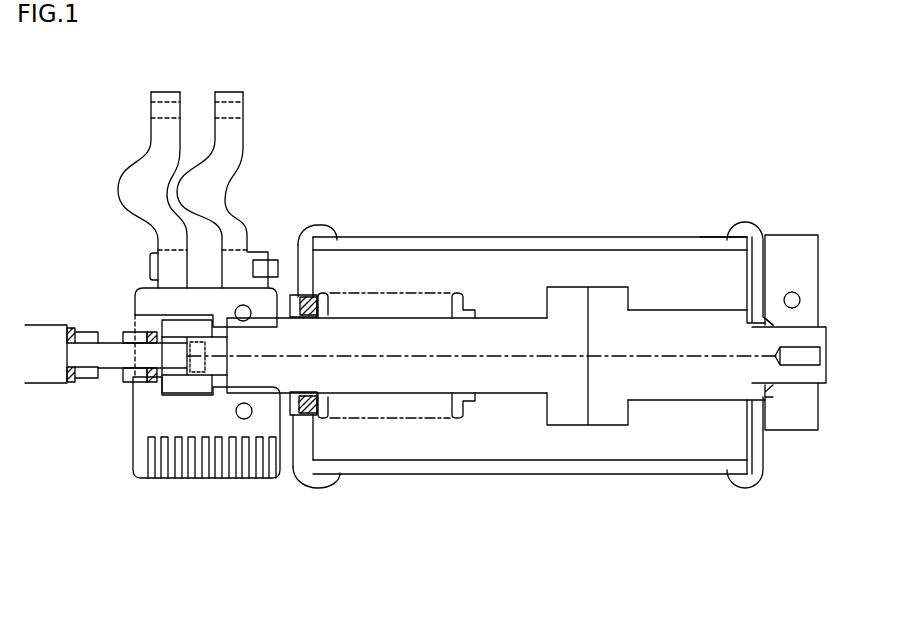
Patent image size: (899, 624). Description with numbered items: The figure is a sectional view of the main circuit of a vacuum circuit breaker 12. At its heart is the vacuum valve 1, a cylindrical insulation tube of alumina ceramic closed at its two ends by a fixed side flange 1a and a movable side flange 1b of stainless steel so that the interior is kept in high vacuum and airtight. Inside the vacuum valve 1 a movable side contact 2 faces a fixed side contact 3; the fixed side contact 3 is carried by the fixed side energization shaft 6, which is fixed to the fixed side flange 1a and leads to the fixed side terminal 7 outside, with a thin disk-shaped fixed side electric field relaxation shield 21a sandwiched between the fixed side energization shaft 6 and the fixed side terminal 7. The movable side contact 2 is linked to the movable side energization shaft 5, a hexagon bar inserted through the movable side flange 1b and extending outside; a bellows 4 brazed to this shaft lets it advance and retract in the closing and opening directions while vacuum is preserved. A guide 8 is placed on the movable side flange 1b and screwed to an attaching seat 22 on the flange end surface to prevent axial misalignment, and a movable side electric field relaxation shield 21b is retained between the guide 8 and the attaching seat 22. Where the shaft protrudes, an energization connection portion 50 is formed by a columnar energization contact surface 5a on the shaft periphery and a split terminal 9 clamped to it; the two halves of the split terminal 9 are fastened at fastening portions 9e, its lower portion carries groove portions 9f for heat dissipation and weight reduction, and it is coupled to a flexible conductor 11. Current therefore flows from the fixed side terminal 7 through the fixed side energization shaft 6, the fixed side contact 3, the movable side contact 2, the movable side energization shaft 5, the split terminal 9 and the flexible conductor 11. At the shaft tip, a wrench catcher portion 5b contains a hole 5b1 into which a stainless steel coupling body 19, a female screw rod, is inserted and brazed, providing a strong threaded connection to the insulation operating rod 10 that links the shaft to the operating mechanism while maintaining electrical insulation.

The vacuum valve 1 is at (573, 237).
The fixed side flange 1a is at (745, 270).
The movable side flange 1b is at (331, 235).
The movable side contact 2 is at (560, 293).
The fixed side contact 3 is at (607, 297).
The bellows 4 is at (393, 293).
The movable side energization shaft 5 is at (413, 390).
The energization contact surface 5a is at (257, 387).
The wrench catcher portion 5b is at (177, 327).
The hole 5b1 is at (183, 343).
The fixed side energization shaft 6 is at (677, 378).
The fixed side terminal 7 is at (788, 247).
The guide 8 is at (292, 415).
The split terminal 9 is at (170, 423).
The fastening portions 9e is at (239, 304).
The groove portions 9f is at (196, 452).
The insulation operating rod 10 is at (45, 365).
The flexible conductor 11 is at (143, 183).
The vacuum circuit breaker 12 is at (713, 150).
The coupling body 19 is at (162, 378).
The fixed side electric field relaxation shield 21a is at (750, 226).
The movable side electric field relaxation shield 21b is at (312, 224).
The attaching seat 22 is at (313, 417).
The energization connection portion 50 is at (267, 563).